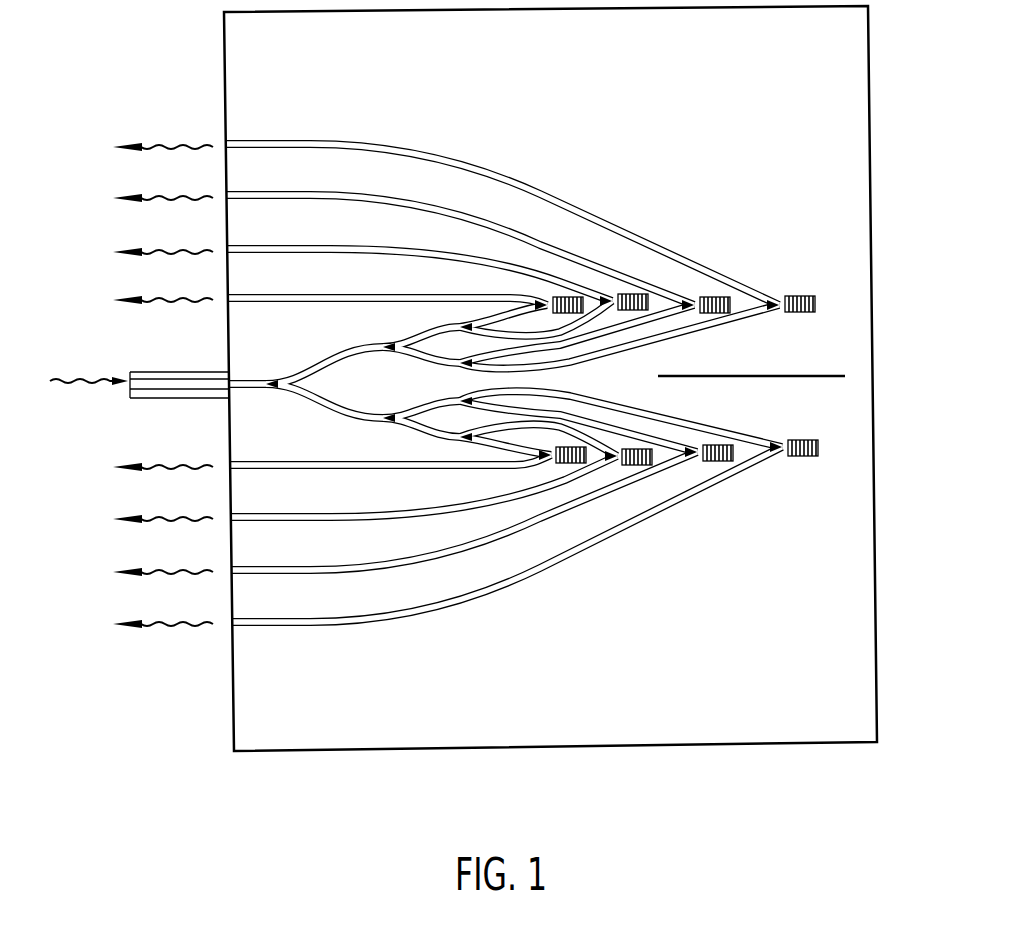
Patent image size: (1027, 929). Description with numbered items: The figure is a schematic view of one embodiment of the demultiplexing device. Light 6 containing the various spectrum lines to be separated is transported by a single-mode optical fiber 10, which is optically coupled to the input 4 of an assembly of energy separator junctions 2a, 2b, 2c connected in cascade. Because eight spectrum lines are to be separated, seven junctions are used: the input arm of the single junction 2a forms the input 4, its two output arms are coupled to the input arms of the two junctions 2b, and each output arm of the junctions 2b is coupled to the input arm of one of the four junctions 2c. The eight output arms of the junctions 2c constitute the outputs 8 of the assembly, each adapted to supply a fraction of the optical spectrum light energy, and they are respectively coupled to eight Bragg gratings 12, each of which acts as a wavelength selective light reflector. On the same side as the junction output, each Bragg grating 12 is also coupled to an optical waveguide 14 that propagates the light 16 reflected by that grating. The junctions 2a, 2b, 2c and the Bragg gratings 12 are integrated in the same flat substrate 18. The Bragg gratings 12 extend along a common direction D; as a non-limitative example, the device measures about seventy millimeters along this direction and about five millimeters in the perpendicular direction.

The energy separator junction 2a is at (330, 410).
The energy separator junctions 2b is at (408, 371).
The energy separator junctions 2c is at (466, 343).
The input 4 is at (243, 380).
The light 6 is at (74, 378).
The outputs 8 is at (597, 312).
The single-mode optical fiber 10 is at (148, 393).
The Bragg gratings 12 is at (550, 296).
The optical waveguide 14 is at (590, 277).
The light 16 is at (140, 298).
The flat substrate 18 is at (812, 736).
The direction D is at (816, 378).